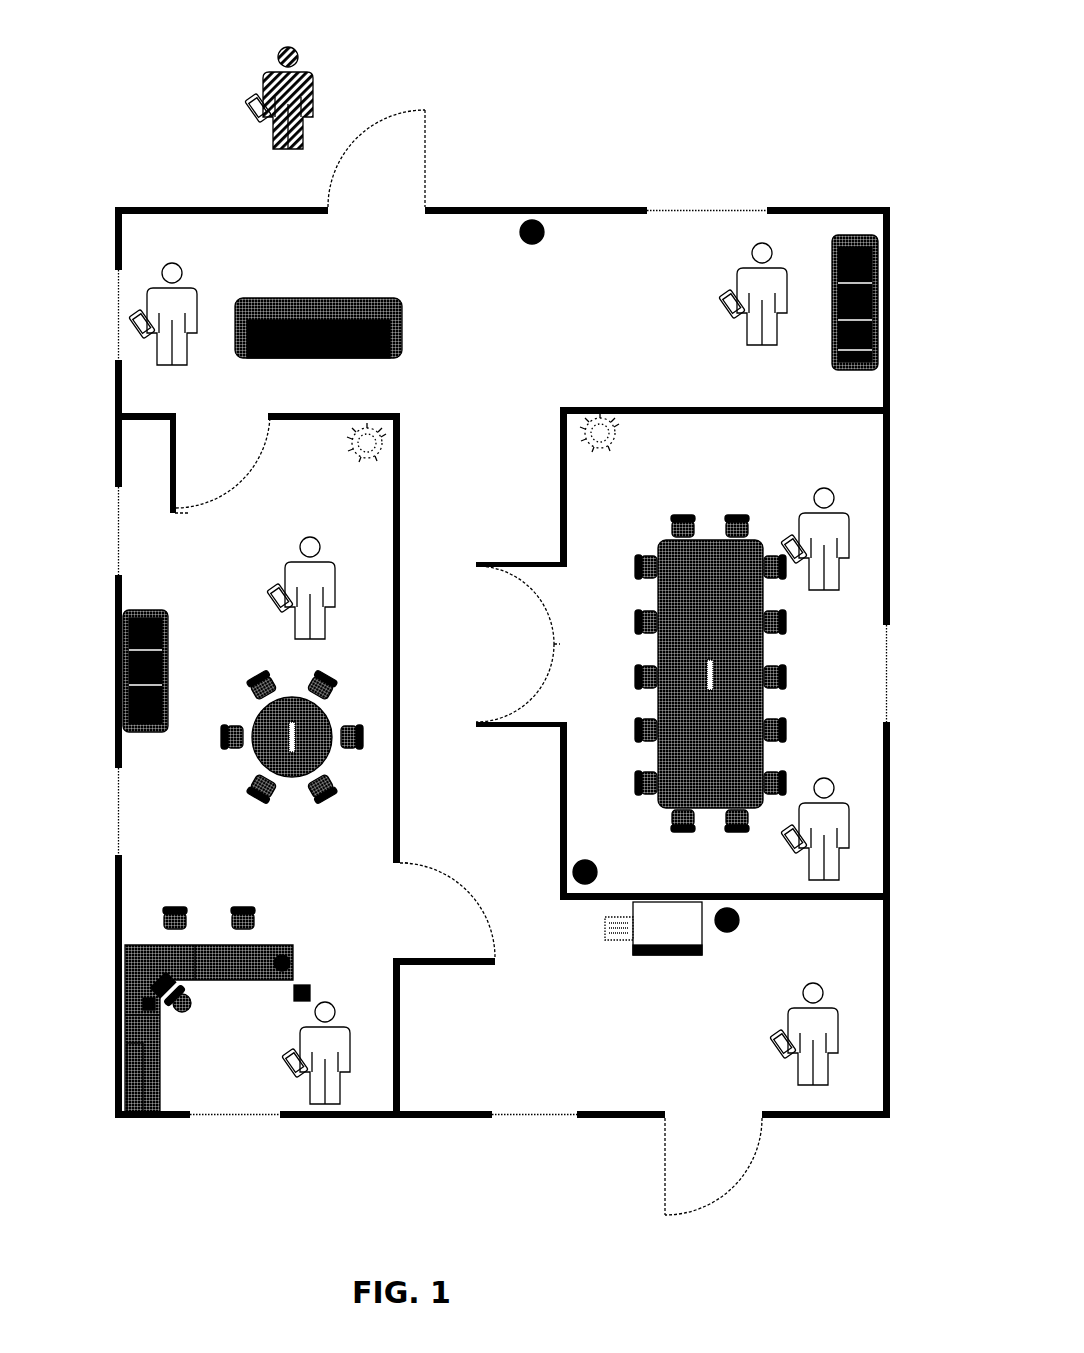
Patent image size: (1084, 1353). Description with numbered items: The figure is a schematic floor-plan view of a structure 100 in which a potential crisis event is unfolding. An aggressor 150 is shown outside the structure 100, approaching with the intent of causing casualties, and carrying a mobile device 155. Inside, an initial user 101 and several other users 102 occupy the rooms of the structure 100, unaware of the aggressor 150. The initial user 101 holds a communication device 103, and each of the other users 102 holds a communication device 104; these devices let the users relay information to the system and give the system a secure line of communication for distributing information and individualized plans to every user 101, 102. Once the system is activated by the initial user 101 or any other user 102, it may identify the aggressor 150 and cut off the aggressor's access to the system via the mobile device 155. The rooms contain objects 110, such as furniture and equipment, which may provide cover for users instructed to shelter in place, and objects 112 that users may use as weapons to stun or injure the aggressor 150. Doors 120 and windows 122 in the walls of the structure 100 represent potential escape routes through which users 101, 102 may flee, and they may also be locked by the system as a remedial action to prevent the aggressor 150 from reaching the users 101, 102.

The structure 100 is at (141, 207).
The initial user 101 is at (186, 284).
The user 102 is at (737, 278).
The communication device 103 is at (143, 352).
The communication device 104 is at (722, 307).
The objects 110 is at (340, 297).
The objects 112 is at (535, 246).
The doors 120 is at (622, 1252).
The windows 122 is at (112, 308).
The aggressor 150 is at (307, 70).
The mobile device 155 is at (255, 108).